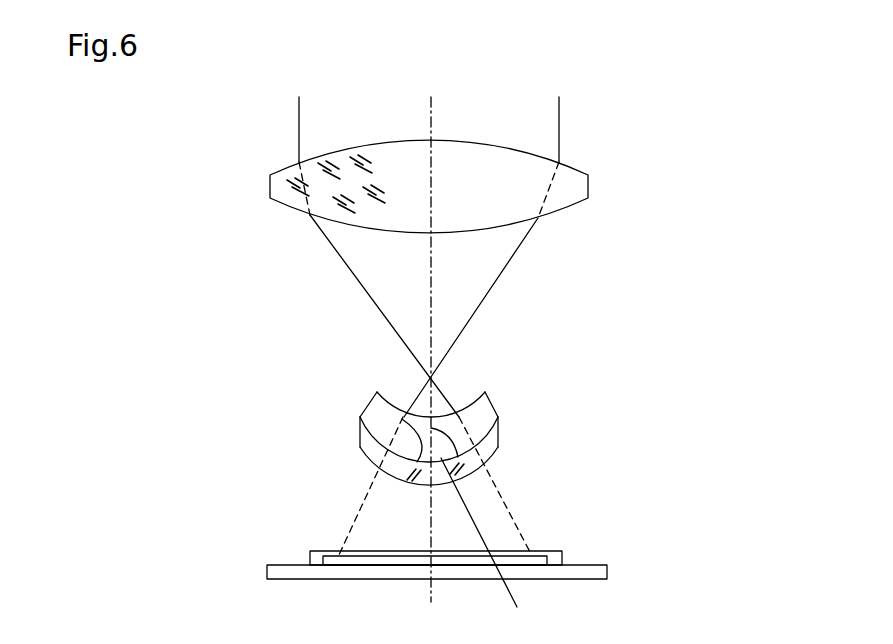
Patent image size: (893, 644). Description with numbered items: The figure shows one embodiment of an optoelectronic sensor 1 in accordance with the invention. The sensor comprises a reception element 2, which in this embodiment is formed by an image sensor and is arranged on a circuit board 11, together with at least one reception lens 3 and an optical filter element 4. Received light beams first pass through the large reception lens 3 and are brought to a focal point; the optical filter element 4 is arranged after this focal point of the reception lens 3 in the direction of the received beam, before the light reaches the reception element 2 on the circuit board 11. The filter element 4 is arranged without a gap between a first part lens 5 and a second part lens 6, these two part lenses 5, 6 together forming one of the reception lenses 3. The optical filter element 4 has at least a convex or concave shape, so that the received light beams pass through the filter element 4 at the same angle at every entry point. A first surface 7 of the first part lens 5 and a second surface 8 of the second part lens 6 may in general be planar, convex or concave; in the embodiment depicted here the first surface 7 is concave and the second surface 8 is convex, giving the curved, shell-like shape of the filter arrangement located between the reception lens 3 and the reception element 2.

The optoelectronic sensor 1 is at (618, 110).
The reception element 2 is at (388, 563).
The reception lens 3 is at (573, 187).
The optical filter element 4 is at (487, 548).
The first part lens 5 is at (370, 417).
The second part lens 6 is at (360, 443).
The first surface 7 is at (397, 407).
The second surface 8 is at (415, 490).
The circuit board 11 is at (577, 572).